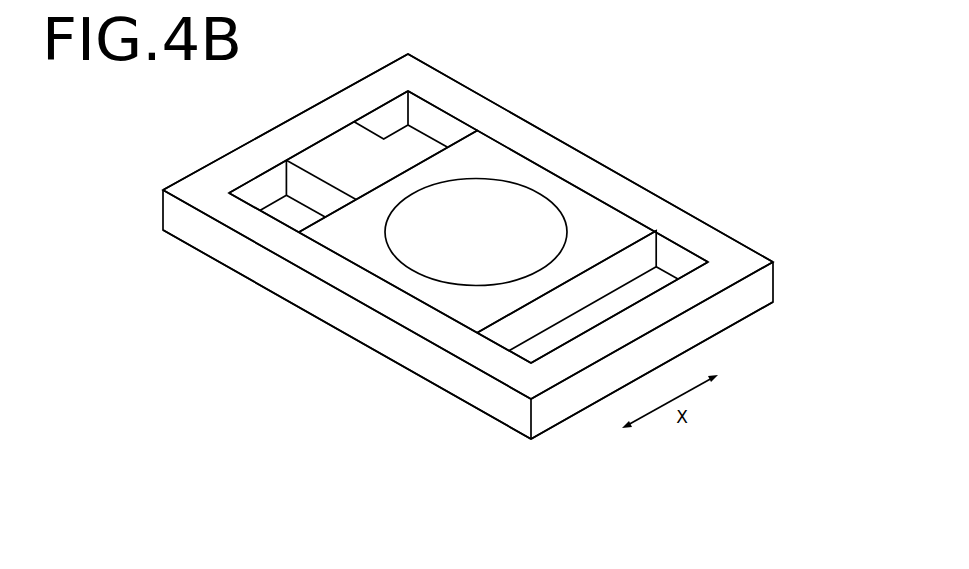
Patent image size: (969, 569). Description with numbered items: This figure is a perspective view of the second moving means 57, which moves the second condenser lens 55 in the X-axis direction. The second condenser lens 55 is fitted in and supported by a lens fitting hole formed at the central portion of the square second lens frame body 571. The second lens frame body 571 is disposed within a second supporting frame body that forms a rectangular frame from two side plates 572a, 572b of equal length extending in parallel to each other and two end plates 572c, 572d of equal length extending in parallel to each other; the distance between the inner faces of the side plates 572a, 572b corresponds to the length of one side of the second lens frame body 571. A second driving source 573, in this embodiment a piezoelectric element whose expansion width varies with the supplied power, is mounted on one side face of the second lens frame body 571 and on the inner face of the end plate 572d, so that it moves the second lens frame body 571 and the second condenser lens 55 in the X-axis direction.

The second moving means 57 is at (608, 138).
The second condenser lens 55 is at (517, 205).
The second lens frame body 571 is at (610, 224).
The side plate 572a is at (293, 246).
The side plate 572b is at (668, 224).
The end plate 572c is at (710, 286).
The end plate 572d is at (243, 175).
The second driving source 573 is at (325, 152).